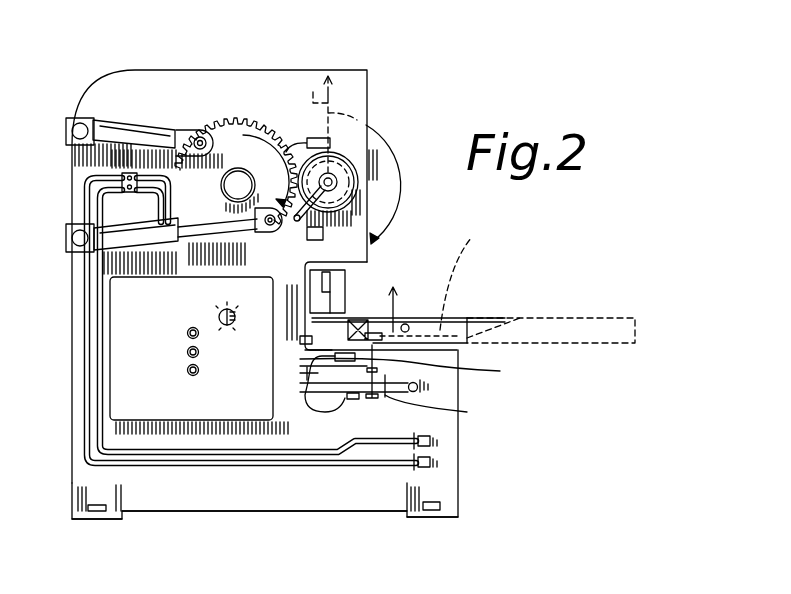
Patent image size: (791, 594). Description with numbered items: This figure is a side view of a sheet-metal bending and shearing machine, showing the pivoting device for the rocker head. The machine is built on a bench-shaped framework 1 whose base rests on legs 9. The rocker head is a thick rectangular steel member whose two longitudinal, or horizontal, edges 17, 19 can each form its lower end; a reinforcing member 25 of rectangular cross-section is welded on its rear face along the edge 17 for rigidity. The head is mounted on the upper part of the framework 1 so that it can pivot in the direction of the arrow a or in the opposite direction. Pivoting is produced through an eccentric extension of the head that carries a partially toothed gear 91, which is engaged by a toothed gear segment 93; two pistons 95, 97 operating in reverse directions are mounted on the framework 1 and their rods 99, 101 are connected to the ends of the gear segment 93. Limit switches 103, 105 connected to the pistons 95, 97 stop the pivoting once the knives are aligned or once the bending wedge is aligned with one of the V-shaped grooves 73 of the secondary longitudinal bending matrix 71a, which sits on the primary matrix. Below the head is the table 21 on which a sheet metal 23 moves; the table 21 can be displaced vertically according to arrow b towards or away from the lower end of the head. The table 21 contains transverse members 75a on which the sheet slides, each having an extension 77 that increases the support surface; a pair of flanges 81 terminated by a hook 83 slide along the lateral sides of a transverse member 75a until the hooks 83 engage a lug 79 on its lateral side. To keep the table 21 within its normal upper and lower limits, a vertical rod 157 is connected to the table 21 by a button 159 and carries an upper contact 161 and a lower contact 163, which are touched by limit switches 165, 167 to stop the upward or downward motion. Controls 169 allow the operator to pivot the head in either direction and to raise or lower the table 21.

The framework 1 is at (288, 522).
The legs 9 is at (155, 518).
The horizontal edge 17 is at (345, 283).
The horizontal edge 19 is at (335, 92).
The table 21 is at (470, 344).
The sheet metal 23 is at (488, 316).
The reinforcing member 25 is at (262, 240).
The secondary longitudinal bending matrix 71a is at (305, 340).
The grooves 73 is at (352, 322).
The transverse members 75a is at (447, 327).
The extension 77 is at (578, 345).
The lug 79 is at (410, 318).
The flanges 81 is at (471, 272).
The hook 83 is at (518, 316).
The partially toothed gear 91 is at (360, 160).
The toothed gear segment 93 is at (236, 117).
The piston 95 is at (128, 133).
The piston 97 is at (110, 238).
The rod 99 is at (176, 137).
The rod 101 is at (193, 230).
The limit switch 103 is at (317, 137).
The limit switch 105 is at (350, 222).
The vertical rod 157 is at (407, 374).
The button 159 is at (372, 348).
The upper contact 161 is at (435, 372).
The lower contact 163 is at (467, 412).
The limit switch 165 is at (292, 378).
The limit switch 167 is at (357, 402).
The controls 169 is at (188, 372).
The arrow a is at (398, 182).
The arrow b is at (404, 324).